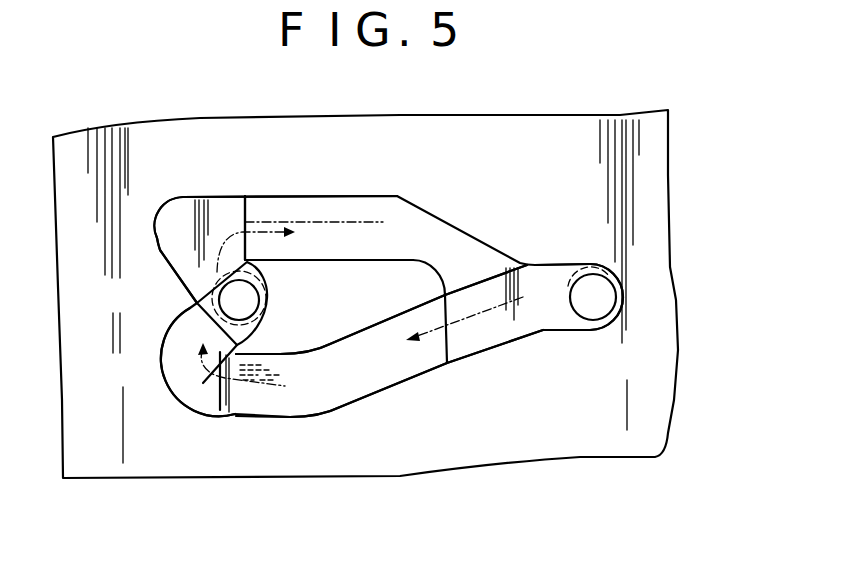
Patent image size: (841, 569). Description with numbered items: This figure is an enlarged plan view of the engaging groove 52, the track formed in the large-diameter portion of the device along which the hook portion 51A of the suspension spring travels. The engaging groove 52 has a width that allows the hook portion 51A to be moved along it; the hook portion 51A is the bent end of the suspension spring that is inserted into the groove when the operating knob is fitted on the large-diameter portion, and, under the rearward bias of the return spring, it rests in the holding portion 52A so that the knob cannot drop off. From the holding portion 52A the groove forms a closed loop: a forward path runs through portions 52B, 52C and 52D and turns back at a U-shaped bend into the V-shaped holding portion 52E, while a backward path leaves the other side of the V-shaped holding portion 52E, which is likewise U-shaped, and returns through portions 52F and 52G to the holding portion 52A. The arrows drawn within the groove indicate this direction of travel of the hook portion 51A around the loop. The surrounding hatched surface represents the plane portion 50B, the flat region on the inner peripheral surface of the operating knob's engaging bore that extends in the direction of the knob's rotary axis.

The plane portion 50B is at (648, 157).
The hook portion 51A is at (266, 311).
The engaging groove 52 is at (534, 216).
The holding portion 52A is at (533, 318).
The forward path portion 52B is at (378, 373).
The forward path portion 52C is at (216, 398).
The forward path portion 52D is at (177, 360).
The V-shaped holding portion 52E is at (197, 303).
The backward path portion 52F is at (198, 197).
The backward path portion 52G is at (336, 209).